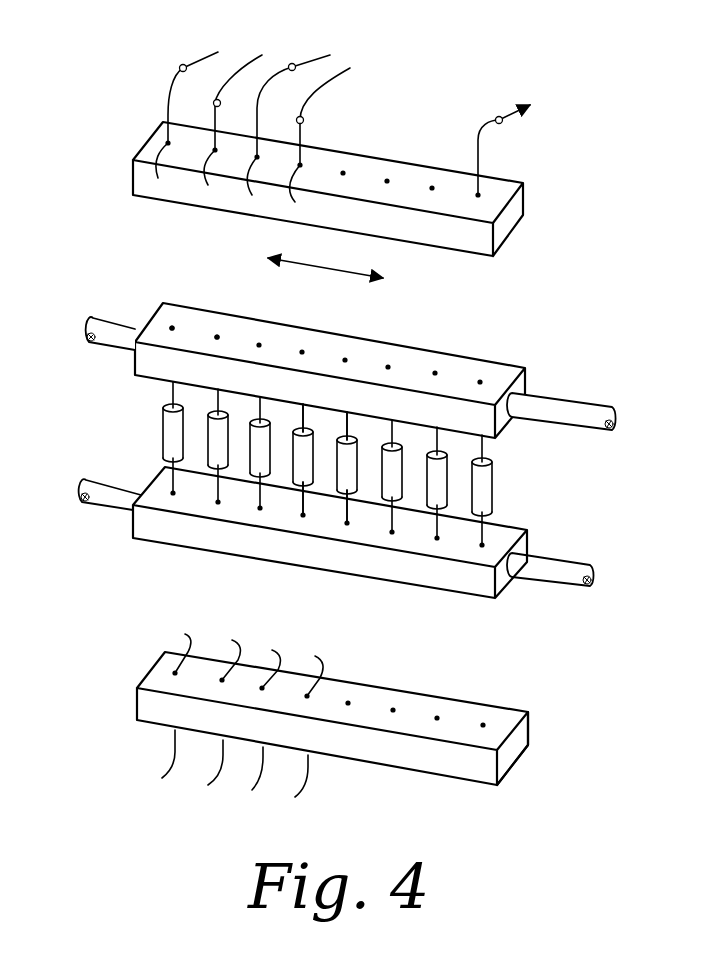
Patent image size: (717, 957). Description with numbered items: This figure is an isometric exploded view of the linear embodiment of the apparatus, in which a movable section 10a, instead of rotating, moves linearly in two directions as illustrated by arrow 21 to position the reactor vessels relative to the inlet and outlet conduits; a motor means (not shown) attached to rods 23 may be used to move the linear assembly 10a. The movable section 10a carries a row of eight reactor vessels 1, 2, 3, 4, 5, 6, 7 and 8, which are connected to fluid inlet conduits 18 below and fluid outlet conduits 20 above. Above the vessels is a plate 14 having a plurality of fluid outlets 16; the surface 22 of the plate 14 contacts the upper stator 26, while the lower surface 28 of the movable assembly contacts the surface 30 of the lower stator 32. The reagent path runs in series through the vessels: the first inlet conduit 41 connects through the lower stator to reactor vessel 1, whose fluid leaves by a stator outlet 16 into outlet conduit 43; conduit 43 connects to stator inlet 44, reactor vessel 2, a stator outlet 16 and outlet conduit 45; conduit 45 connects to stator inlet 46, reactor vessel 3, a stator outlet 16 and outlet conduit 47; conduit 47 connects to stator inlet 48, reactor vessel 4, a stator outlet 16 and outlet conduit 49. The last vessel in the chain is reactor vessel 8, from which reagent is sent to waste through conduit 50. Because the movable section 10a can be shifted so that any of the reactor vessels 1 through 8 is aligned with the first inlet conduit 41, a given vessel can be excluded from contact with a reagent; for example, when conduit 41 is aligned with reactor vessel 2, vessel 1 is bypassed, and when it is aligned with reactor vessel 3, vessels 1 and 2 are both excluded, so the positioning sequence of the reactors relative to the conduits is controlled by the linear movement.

The reactor vessel 1 is at (162, 413).
The reactor vessel 2 is at (208, 428).
The reactor vessel 3 is at (252, 442).
The reactor vessel 4 is at (297, 460).
The reactor vessel 5 is at (350, 457).
The reactor vessel 6 is at (393, 478).
The reactor vessel 7 is at (440, 497).
The reactor vessel 8 is at (492, 507).
The movable section 10a is at (600, 485).
The plate 14 is at (520, 380).
The fluid outlets 16 is at (217, 335).
The fluid inlet conduits 18 is at (347, 507).
The fluid outlet conduits 20 is at (347, 413).
The arrow 21 is at (321, 270).
The surface 22 is at (450, 363).
The rods 23 is at (122, 320).
The stator 26 is at (505, 228).
The surface 28 is at (162, 540).
The surface 30 is at (473, 712).
The stator 32 is at (515, 742).
The inlet conduit 41 is at (307, 772).
The outlet conduit 43 is at (179, 68).
The stator inlet 44 is at (263, 753).
The outlet conduit 45 is at (213, 104).
The stator inlet 46 is at (222, 753).
The outlet conduit 47 is at (312, 82).
The stator inlet 48 is at (168, 757).
The outlet conduit 49 is at (304, 120).
The waste conduit 50 is at (503, 121).